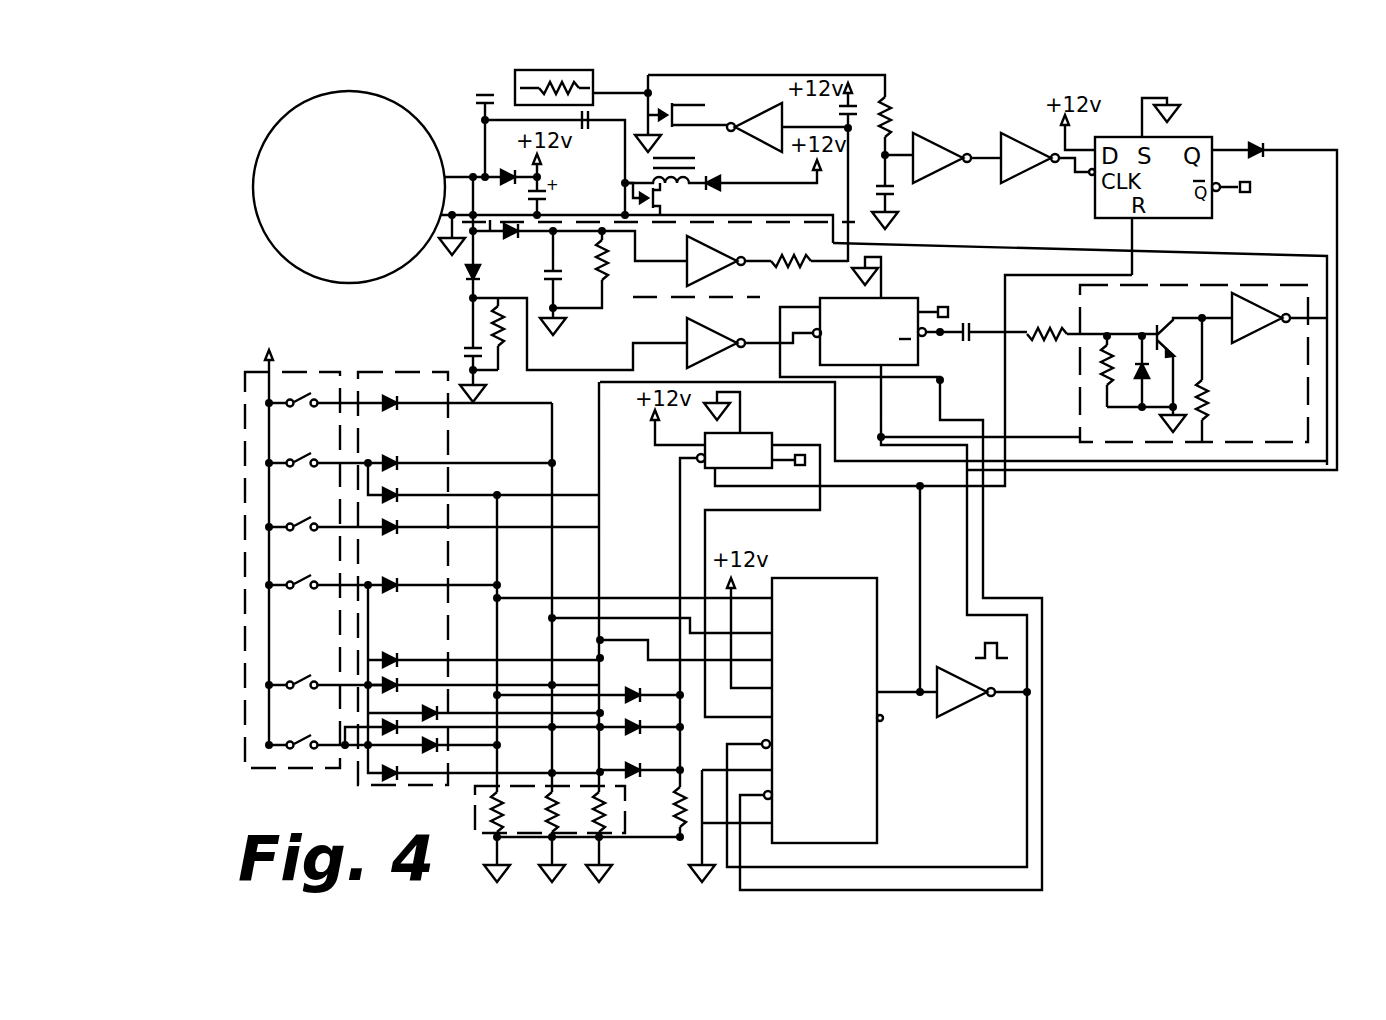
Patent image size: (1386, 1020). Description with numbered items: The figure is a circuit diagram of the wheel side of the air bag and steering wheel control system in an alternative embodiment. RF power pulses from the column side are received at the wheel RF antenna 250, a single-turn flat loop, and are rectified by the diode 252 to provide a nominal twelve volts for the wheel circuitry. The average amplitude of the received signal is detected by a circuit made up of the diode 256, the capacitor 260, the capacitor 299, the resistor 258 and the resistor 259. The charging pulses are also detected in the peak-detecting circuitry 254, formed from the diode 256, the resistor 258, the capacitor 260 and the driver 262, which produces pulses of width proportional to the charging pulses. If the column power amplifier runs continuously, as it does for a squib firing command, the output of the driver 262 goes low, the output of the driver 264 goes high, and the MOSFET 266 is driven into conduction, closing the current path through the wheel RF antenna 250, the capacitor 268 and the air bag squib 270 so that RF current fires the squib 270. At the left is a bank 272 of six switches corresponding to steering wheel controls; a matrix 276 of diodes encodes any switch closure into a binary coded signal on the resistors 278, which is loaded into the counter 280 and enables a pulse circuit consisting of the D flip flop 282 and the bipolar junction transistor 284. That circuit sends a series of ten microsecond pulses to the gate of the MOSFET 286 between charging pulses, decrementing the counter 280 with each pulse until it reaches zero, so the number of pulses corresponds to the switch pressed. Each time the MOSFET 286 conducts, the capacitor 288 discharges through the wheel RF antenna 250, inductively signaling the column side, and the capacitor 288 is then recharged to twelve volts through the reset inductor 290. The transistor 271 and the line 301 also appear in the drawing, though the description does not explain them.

The wheel RF antenna 250 is at (273, 123).
The diode 252 is at (506, 171).
The peak-detecting circuitry 254 is at (758, 247).
The diode 256 is at (500, 237).
The resistor 258 is at (630, 296).
The resistor 259 is at (765, 272).
The capacitor 260 is at (606, 290).
The driver 262 is at (718, 320).
The driver 264 is at (856, 104).
The MOSFET 266 is at (705, 104).
The capacitor 268 is at (485, 94).
The air bag squib 270 is at (579, 86).
The transistor 271 is at (652, 93).
The bank of switches 272 is at (336, 365).
The diode matrix 276 is at (425, 788).
The resistors 278 is at (475, 818).
The counter 280 is at (877, 773).
The D flip flop 282 is at (905, 296).
The bipolar junction transistor 284 is at (1223, 445).
The MOSFET 286 is at (662, 201).
The capacitor 288 is at (590, 127).
The reset inductor 290 is at (678, 140).
The capacitor 299 is at (873, 128).
The reset line 301 is at (1334, 237).